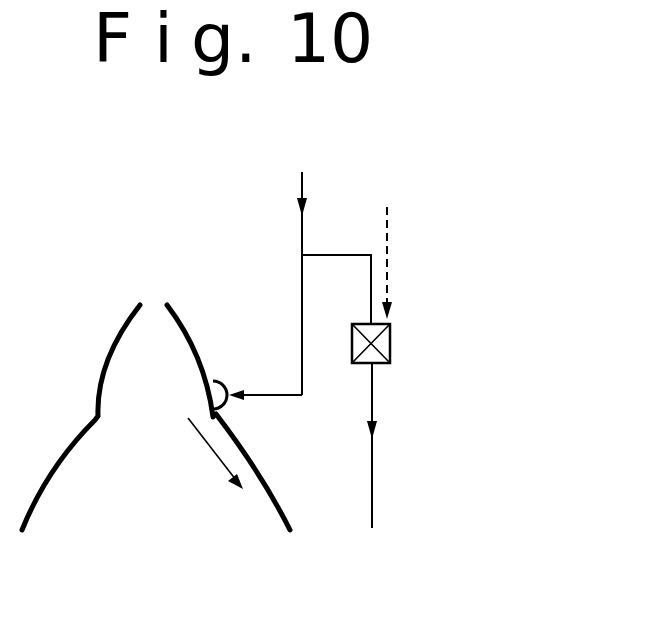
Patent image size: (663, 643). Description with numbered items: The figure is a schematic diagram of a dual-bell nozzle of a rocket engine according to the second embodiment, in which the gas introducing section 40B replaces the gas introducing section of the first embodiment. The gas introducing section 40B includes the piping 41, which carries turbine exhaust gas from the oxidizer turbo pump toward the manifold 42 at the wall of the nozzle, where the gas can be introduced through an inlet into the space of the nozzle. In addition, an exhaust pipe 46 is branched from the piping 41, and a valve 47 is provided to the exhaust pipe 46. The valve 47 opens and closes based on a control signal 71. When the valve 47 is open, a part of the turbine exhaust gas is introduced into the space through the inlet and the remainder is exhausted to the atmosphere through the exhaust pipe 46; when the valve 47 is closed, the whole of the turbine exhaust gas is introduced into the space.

The gas introducing section 40B is at (520, 218).
The piping 41 is at (301, 233).
The manifold 42 is at (224, 379).
The exhaust pipe 46 is at (343, 252).
The valve 47 is at (392, 340).
The control signal 71 is at (389, 221).